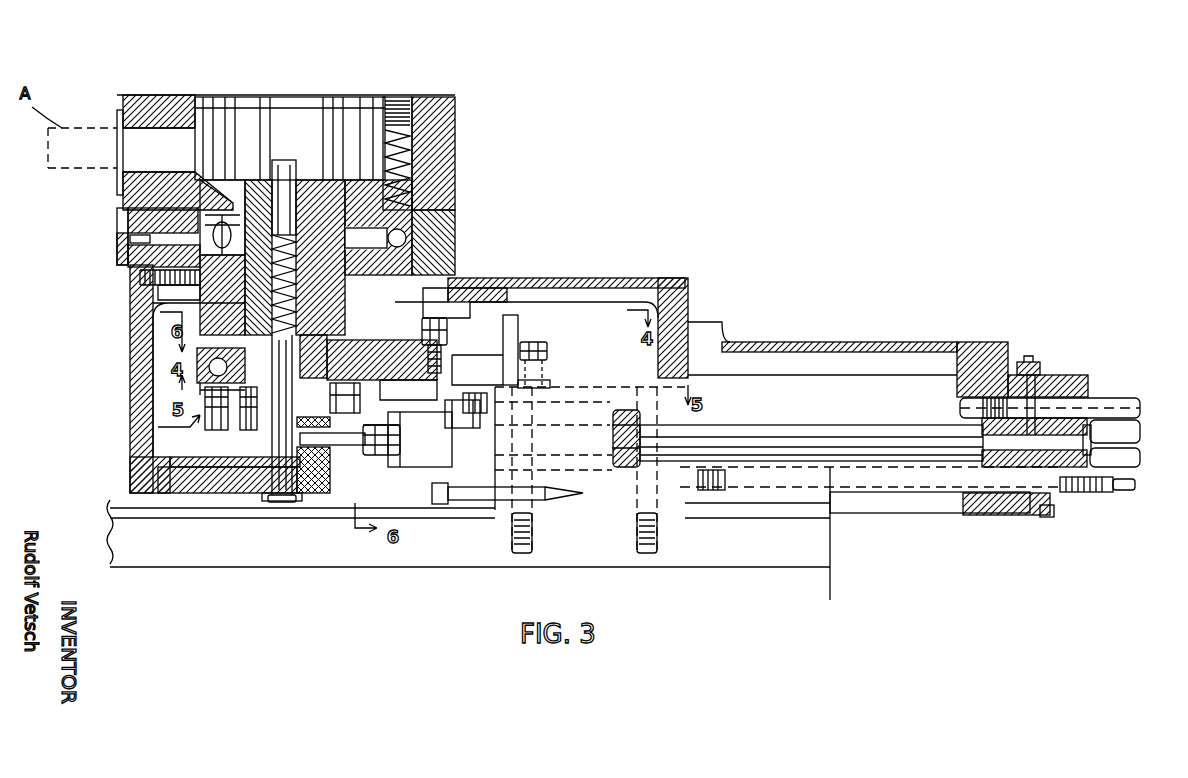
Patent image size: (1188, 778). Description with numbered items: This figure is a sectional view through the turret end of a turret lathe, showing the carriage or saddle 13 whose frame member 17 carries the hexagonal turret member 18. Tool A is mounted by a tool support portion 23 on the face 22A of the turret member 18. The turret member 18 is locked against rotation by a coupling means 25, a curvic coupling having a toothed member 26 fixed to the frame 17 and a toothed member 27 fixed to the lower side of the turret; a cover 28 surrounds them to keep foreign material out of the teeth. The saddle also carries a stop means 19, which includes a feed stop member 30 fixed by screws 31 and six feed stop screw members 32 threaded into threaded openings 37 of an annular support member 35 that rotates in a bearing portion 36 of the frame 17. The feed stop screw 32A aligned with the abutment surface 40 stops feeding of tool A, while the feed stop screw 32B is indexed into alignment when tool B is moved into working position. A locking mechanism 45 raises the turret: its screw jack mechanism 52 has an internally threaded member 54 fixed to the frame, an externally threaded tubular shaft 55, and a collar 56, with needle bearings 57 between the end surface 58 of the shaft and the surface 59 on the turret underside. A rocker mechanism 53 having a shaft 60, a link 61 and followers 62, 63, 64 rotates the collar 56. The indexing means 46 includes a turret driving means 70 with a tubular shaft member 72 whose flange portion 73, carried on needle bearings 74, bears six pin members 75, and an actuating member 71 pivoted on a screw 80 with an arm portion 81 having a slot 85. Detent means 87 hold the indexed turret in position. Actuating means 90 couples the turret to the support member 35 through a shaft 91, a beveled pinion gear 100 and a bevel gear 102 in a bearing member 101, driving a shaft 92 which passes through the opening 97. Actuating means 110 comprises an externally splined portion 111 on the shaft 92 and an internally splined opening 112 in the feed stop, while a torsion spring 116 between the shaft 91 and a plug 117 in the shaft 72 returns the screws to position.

The carriage or saddle 13 is at (580, 202).
The frame member 17 is at (546, 273).
The turret member 18 is at (179, 82).
The stop means 19 is at (967, 558).
The face 22A is at (115, 122).
The tool support portions 23 is at (117, 177).
The coupling means 25 is at (103, 234).
The toothed member 26 is at (125, 205).
The toothed member 27 is at (128, 263).
The cover 28 is at (118, 238).
The feed stop member 30 is at (590, 510).
The screws 31 is at (532, 537).
The feed stop screw members 32 is at (1138, 400).
The feed stop screw 32A is at (1135, 488).
The feed stop screw 32B is at (1140, 466).
The annular support member 35 is at (1052, 513).
The bearing portion 36 is at (988, 360).
The threaded openings 37 is at (1022, 515).
The abutment surface 40 is at (680, 493).
The locking mechanism 45 is at (429, 285).
The indexing means 46 is at (345, 498).
The screw jack mechanism 52 is at (158, 322).
The rocker mechanism 53 is at (527, 326).
The internally threaded member 54 is at (143, 299).
The externally threaded tubular shaft 55 is at (173, 328).
The collar 56 is at (408, 391).
The needle bearings 57 is at (235, 195).
The end surface 58 is at (335, 232).
The surface 59 is at (216, 233).
The shaft 60 is at (520, 305).
The link 61 is at (505, 340).
The follower 62 is at (553, 385).
The follower 63 is at (490, 400).
The follower 64 is at (437, 340).
The turret driving means 70 is at (153, 458).
The actuating member 71 is at (418, 476).
The tubular shaft member 72 is at (310, 190).
The flange portion 73 is at (200, 397).
The needle bearings 74 is at (361, 399).
The pin members 75 is at (215, 432).
The screw 80 is at (435, 498).
The arm portion 81 is at (412, 420).
The slot 85 is at (471, 428).
The detent means 87 is at (426, 197).
The actuating means 90 is at (837, 508).
The shaft 91 is at (266, 496).
The shaft 92 is at (967, 442).
The opening 97 is at (620, 463).
The beveled pinion gear 100 is at (282, 502).
The bearing member 101 is at (192, 493).
The bevel gear 102 is at (330, 457).
The actuating means 110 is at (723, 411).
The externally splined portion 111 is at (763, 433).
The internally splined opening 112 is at (637, 420).
The torsion spring 116 is at (233, 217).
The plug 117 is at (280, 170).